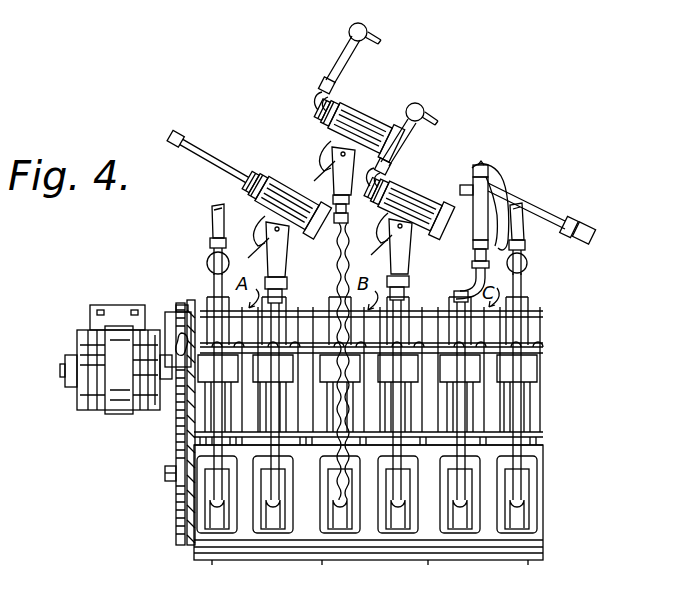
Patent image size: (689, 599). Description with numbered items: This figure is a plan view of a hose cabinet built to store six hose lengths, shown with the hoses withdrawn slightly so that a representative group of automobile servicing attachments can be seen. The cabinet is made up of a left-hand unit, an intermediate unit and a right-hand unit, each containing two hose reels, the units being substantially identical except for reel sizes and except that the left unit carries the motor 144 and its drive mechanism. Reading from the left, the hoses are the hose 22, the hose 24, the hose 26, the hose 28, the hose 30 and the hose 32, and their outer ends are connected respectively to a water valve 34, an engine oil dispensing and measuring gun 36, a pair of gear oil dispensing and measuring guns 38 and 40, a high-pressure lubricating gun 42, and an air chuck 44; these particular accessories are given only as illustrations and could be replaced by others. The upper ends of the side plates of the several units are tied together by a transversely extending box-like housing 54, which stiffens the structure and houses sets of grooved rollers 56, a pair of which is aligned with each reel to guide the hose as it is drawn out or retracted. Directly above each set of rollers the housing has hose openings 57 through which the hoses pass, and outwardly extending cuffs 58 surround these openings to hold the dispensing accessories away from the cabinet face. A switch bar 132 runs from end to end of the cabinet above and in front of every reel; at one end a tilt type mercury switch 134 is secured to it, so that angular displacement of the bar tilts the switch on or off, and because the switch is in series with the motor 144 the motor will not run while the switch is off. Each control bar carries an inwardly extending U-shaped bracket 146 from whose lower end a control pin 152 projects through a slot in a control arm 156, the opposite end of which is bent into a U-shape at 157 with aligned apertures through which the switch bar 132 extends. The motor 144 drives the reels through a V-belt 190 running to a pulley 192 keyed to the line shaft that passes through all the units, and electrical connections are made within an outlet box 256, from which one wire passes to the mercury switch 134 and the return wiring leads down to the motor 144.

The hose 22 is at (217, 433).
The hose 24 is at (338, 457).
The hose 26 is at (318, 453).
The hose 28 is at (402, 452).
The hose 30 is at (467, 413).
The hose 32 is at (530, 436).
The water valve 34 is at (210, 242).
The engine oil dispensing and measuring gun 36 is at (285, 188).
The gear oil dispensing and measuring gun 38 is at (365, 122).
The gear oil dispensing and measuring gun 40 is at (413, 200).
The high-pressure lubricating gun 42 is at (483, 180).
The air chuck 44 is at (523, 238).
The box-like housing 54 is at (540, 535).
The grooved rollers 56 is at (218, 528).
The hose openings 57 is at (210, 503).
The cuffs 58 is at (210, 497).
The switch bar 132 is at (545, 345).
The tilt type mercury switch 134 is at (145, 301).
The motor 144 is at (116, 357).
The U-shaped bracket 146 is at (250, 398).
The control pin 152 is at (500, 380).
The control arm 156 is at (375, 335).
The U-shaped end 157 is at (250, 335).
The V-belt 190 is at (185, 422).
The pulley 192 is at (175, 491).
The outlet box 256 is at (184, 340).